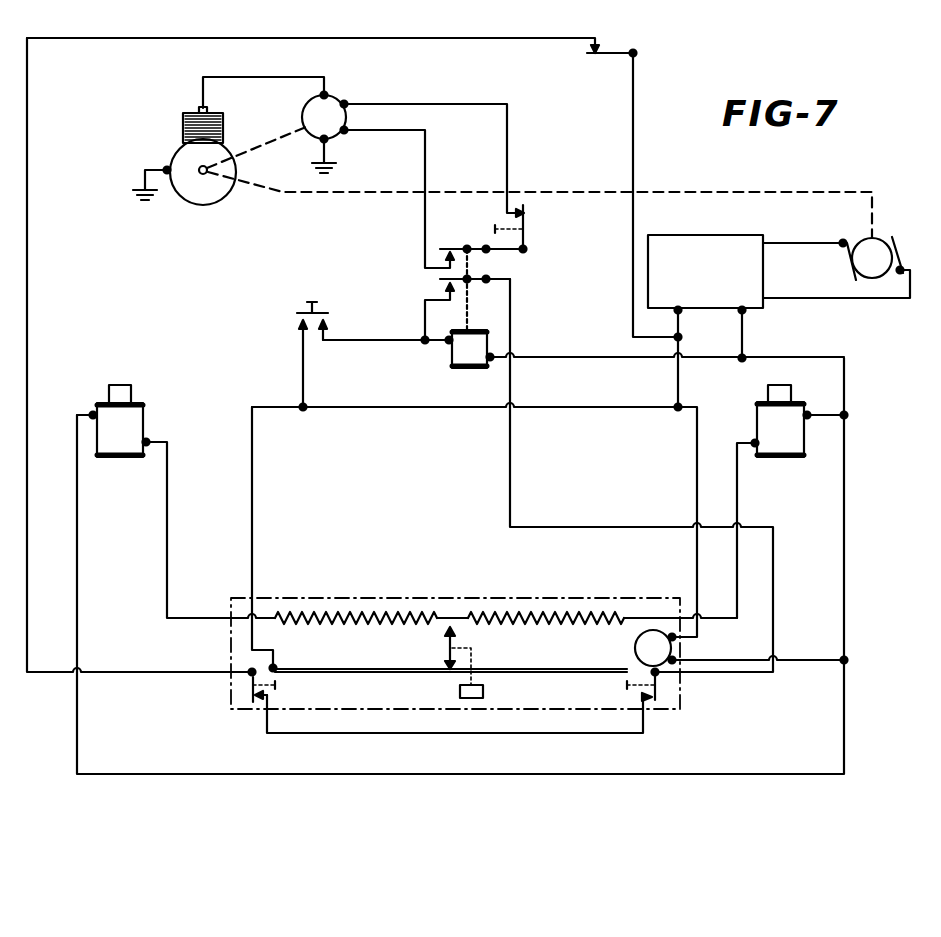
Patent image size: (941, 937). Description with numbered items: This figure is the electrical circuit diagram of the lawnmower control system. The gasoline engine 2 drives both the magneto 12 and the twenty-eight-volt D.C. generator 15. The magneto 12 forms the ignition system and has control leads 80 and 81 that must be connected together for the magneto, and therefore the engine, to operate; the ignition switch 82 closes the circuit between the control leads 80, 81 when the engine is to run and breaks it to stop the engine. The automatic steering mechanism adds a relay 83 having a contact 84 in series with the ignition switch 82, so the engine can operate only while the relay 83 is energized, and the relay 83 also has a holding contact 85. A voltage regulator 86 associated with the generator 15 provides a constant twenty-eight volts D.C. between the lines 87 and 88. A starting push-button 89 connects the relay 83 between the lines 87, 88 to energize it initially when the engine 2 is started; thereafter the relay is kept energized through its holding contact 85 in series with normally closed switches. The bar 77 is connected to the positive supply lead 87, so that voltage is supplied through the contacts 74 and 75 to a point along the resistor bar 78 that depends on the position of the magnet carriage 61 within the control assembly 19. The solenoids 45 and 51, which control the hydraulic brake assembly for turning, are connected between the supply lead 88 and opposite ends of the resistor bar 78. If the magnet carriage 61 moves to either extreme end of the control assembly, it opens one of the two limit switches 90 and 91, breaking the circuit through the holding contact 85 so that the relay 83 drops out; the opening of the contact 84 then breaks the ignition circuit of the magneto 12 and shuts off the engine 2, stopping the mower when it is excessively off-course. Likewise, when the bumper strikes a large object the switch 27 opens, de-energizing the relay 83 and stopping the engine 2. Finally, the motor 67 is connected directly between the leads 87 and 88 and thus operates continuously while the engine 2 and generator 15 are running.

The gasoline engine 2 is at (182, 155).
The magneto 12 is at (307, 110).
The 28-volt D.C. generator 15 is at (875, 238).
The control assembly 19 is at (526, 602).
The switch 27 is at (598, 57).
The solenoid 45 is at (138, 418).
The solenoid 51 is at (757, 415).
The magnet carriage 61 is at (460, 692).
The motor 67 is at (635, 648).
The contact 74 is at (445, 660).
The contact 75 is at (443, 636).
The bar 77 is at (355, 669).
The resistor bar 78 is at (384, 587).
The control lead 80 is at (425, 155).
The control lead 81 is at (475, 104).
The ignition switch 82 is at (526, 218).
The relay 83 is at (452, 360).
The contact 84 is at (451, 249).
The holding contact 85 is at (440, 279).
The voltage regulator 86 is at (726, 222).
The line 87 is at (680, 328).
The line 88 is at (744, 333).
The starting push-button 89 is at (322, 308).
The limit switch 90 is at (245, 688).
The limit switch 91 is at (627, 693).